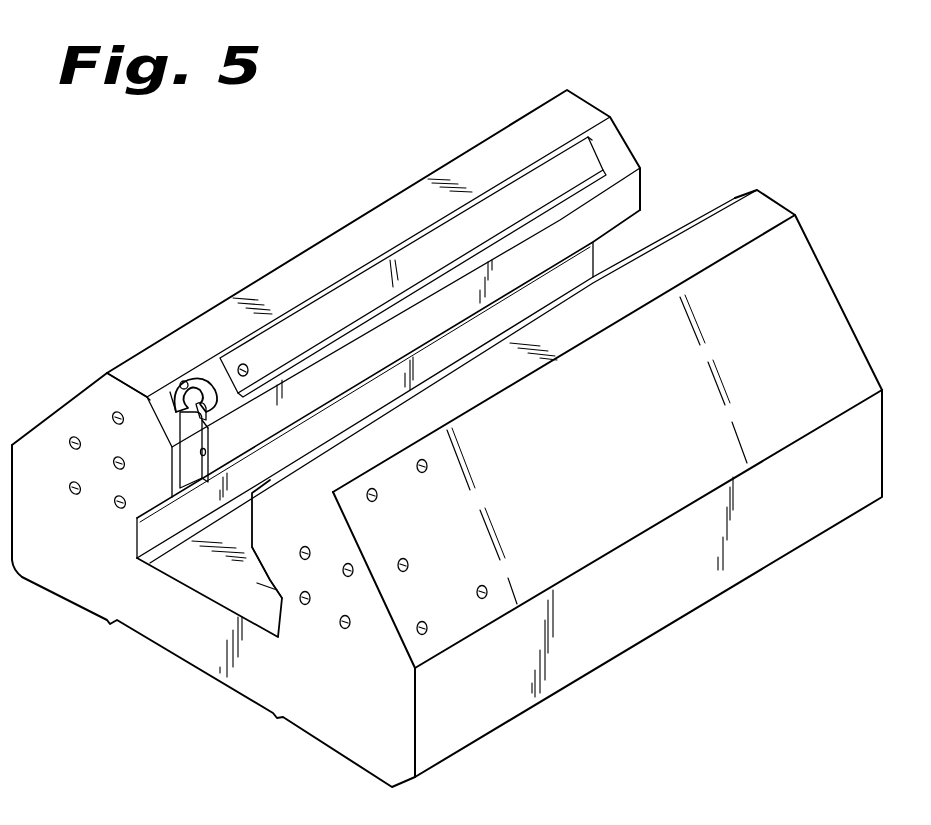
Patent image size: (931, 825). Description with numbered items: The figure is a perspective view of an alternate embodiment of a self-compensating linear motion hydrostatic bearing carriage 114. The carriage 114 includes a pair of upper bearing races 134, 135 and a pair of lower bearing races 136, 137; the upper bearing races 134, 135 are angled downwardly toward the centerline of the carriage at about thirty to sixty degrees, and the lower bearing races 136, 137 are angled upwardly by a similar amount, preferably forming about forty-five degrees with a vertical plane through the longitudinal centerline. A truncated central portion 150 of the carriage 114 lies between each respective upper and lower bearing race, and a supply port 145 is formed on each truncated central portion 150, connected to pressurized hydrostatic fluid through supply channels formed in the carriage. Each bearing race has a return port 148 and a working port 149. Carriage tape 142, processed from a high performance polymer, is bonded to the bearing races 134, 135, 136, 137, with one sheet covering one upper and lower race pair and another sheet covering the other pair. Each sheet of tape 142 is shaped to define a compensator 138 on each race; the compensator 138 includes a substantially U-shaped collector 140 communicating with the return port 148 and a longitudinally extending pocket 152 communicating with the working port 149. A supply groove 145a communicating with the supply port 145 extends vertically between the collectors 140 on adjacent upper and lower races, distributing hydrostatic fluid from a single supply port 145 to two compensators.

The bearing carriage 114 is at (658, 68).
The upper bearing race 134 is at (110, 542).
The upper bearing race 135 is at (258, 603).
The lower bearing race 136 is at (146, 395).
The lower bearing race 137 is at (312, 497).
The compensator 138 is at (210, 388).
The U-shaped collector 140 is at (164, 388).
The carriage tape 142 is at (622, 142).
The supply port 145 is at (202, 454).
The supply groove 145a is at (208, 434).
The return port 148 is at (182, 380).
The working port 149 is at (246, 363).
The truncated central portion 150 is at (165, 462).
The pocket 152 is at (412, 246).